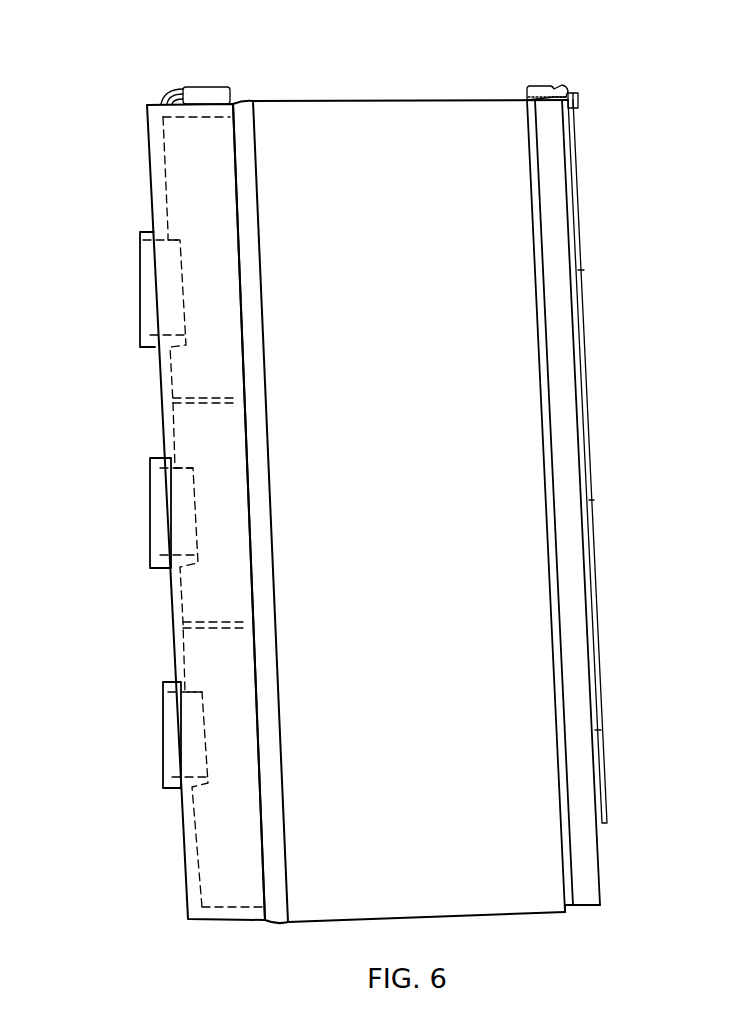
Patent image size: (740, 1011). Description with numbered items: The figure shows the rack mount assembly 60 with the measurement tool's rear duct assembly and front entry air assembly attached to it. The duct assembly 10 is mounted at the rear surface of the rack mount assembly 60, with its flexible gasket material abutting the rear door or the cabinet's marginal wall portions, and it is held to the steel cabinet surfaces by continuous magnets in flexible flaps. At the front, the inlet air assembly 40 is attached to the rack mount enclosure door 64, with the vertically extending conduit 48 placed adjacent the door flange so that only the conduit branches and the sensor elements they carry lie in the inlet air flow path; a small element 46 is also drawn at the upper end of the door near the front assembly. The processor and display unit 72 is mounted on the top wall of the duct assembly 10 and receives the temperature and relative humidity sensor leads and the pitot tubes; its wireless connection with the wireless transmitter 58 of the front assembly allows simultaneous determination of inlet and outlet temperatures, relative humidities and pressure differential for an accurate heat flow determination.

The duct assembly 10 is at (122, 377).
The inlet air assembly 40 is at (568, 67).
The latch block 46 is at (582, 105).
The vertically extending conduit 48 is at (590, 432).
The wireless transmitter 58 is at (530, 85).
The rack mount assembly 60 is at (385, 62).
The rack mount enclosure door 64 is at (602, 865).
The processor and display unit 72 is at (210, 85).